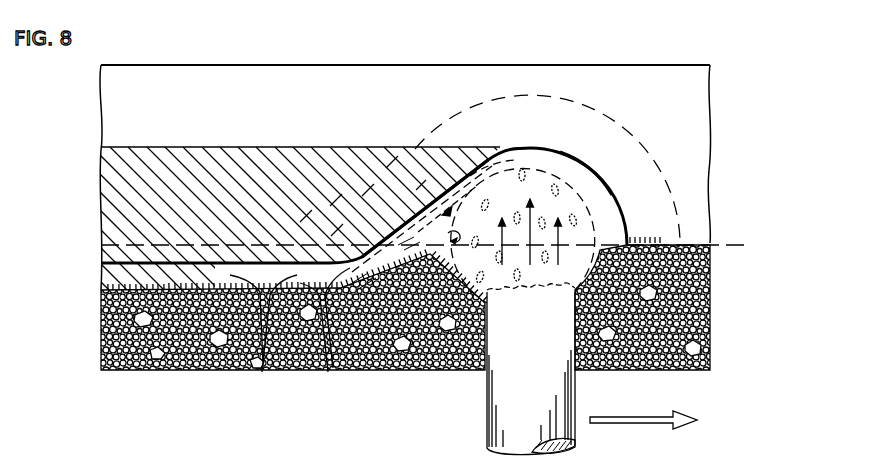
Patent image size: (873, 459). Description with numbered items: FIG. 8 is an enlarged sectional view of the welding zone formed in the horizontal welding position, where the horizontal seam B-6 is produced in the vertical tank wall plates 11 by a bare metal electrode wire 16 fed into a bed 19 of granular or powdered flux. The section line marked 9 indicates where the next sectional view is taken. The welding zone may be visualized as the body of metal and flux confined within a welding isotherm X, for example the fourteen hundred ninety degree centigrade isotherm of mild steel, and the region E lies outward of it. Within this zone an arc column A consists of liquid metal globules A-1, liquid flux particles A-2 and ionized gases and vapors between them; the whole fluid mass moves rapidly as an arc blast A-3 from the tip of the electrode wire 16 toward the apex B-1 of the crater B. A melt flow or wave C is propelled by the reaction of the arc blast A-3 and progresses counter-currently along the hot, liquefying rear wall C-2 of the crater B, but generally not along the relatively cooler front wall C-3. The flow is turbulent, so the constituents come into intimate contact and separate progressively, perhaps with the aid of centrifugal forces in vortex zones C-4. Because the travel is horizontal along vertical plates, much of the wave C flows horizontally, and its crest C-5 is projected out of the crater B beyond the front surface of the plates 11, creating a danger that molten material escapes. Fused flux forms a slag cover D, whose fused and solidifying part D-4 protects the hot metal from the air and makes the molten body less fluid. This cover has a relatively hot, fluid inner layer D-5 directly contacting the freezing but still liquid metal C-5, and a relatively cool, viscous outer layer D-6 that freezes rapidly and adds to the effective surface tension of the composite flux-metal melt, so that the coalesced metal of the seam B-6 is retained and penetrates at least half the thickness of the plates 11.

The plates 11 is at (713, 95).
The horizontal seam B-6 is at (141, 156).
The fused slag cover D is at (308, 253).
The crest of the wave C-5 is at (344, 218).
The crater B is at (495, 168).
The vortex zones C-4 is at (414, 208).
The melt flow zone C is at (396, 224).
The rear wall C-2 is at (461, 177).
The welding isotherm X is at (433, 126).
The outer zone E is at (615, 143).
The apex of the crater B-1 is at (567, 165).
The front wall C-3 is at (612, 196).
The arc column A is at (543, 186).
The liquid flux particles A-2 is at (577, 221).
The arc blast A-3 is at (548, 232).
The liquid metal globules A-1 is at (575, 258).
The slag cover D-4 is at (103, 281).
The bed of granular flux 19 is at (191, 372).
The inner layer D-5 is at (263, 365).
The outer layer D-6 is at (328, 372).
The electrode wire 16 is at (576, 410).
The section line 9 is at (49, 283).